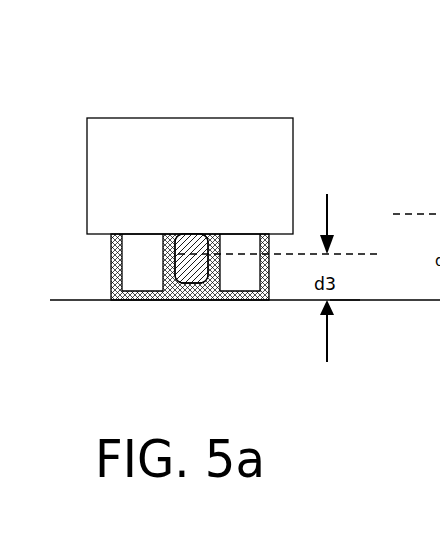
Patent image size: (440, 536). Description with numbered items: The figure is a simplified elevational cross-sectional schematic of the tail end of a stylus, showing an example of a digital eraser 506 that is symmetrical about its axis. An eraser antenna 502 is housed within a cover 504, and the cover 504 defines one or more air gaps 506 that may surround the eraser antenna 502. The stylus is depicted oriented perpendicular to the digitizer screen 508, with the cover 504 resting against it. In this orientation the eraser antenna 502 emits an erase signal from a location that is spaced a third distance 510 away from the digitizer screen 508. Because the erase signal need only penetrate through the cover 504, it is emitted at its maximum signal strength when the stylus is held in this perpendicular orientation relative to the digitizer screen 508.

The eraser antenna 502 is at (192, 240).
The cover 504 is at (205, 297).
The digital eraser 506 is at (236, 92).
The digitizer screen 508 is at (88, 299).
The distance d3 510 is at (337, 288).